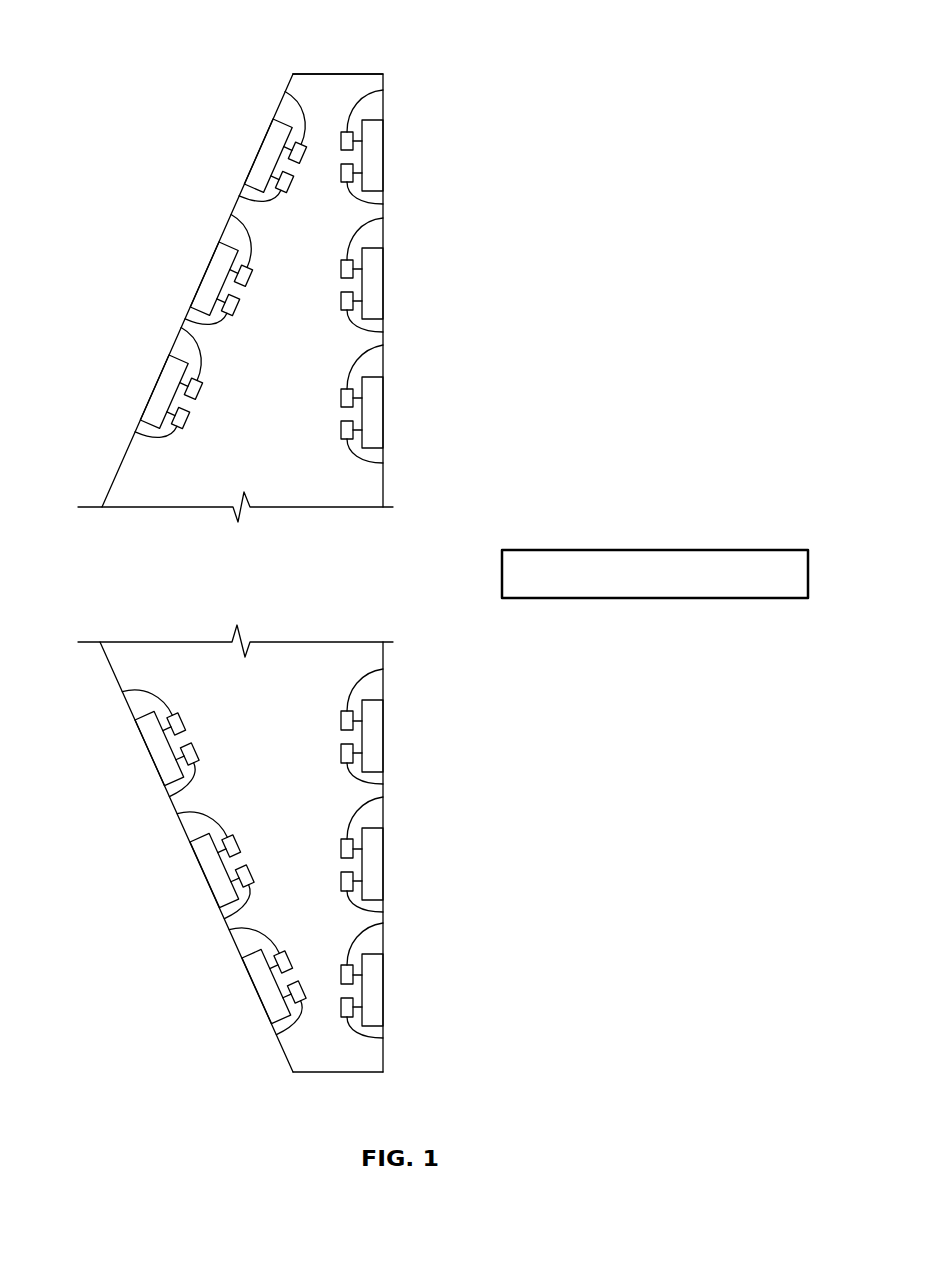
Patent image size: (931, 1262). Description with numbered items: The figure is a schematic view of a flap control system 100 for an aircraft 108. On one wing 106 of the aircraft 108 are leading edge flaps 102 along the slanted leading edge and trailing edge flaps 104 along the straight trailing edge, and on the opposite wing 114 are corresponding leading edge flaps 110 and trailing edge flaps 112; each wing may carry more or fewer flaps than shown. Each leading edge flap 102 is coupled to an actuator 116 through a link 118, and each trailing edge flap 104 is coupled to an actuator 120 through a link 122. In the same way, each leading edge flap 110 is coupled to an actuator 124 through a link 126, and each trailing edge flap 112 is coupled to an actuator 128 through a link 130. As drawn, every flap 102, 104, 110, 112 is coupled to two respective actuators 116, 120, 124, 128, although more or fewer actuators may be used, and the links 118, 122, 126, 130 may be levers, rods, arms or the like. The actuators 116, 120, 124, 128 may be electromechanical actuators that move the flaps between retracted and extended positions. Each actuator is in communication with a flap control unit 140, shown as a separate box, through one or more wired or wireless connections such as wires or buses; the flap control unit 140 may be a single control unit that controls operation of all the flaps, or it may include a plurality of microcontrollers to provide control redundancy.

The flap control system 100 is at (571, 242).
The leading edge flaps 102 is at (190, 273).
The trailing edge flaps 104 is at (405, 284).
The wing 106 is at (338, 74).
The aircraft 108 is at (147, 177).
The leading edge flaps 110 is at (189, 868).
The trailing edge flaps 112 is at (405, 863).
The opposite wing 114 is at (337, 1072).
The actuator 116 is at (196, 265).
The link 118 is at (189, 267).
The actuator 120 is at (404, 277).
The link 122 is at (399, 276).
The actuator 124 is at (192, 872).
The link 126 is at (189, 880).
The actuator 128 is at (404, 847).
The link 130 is at (388, 848).
The flap control unit 140 is at (656, 550).